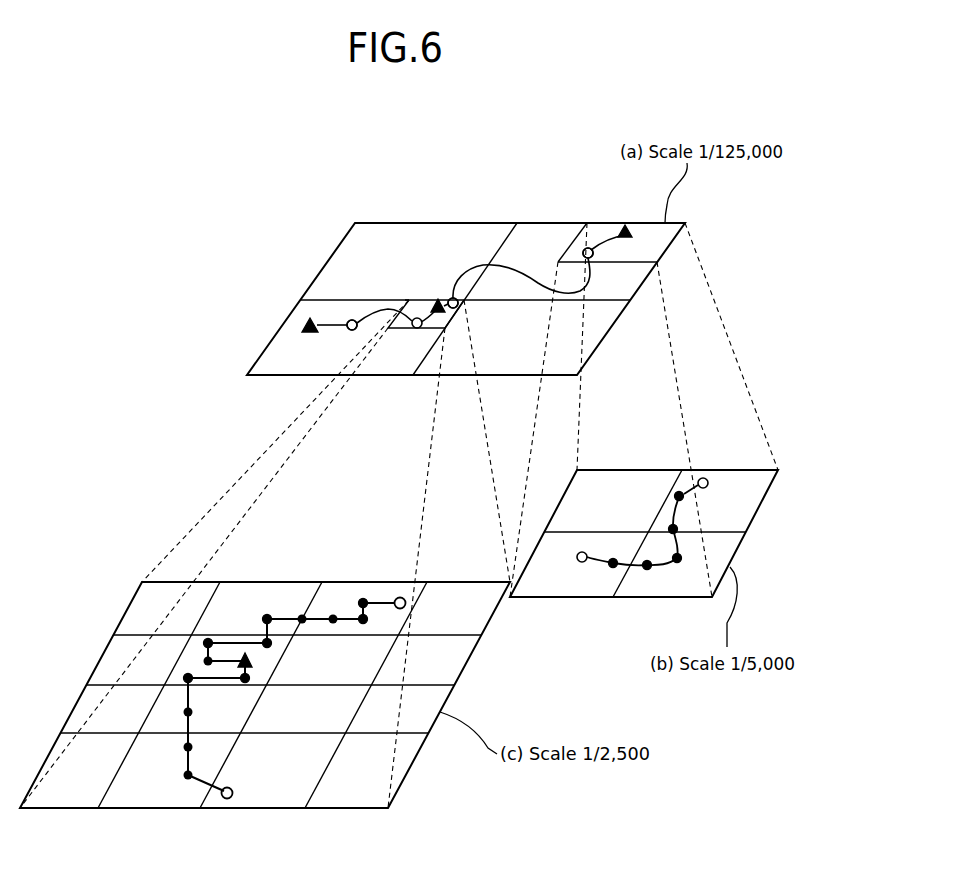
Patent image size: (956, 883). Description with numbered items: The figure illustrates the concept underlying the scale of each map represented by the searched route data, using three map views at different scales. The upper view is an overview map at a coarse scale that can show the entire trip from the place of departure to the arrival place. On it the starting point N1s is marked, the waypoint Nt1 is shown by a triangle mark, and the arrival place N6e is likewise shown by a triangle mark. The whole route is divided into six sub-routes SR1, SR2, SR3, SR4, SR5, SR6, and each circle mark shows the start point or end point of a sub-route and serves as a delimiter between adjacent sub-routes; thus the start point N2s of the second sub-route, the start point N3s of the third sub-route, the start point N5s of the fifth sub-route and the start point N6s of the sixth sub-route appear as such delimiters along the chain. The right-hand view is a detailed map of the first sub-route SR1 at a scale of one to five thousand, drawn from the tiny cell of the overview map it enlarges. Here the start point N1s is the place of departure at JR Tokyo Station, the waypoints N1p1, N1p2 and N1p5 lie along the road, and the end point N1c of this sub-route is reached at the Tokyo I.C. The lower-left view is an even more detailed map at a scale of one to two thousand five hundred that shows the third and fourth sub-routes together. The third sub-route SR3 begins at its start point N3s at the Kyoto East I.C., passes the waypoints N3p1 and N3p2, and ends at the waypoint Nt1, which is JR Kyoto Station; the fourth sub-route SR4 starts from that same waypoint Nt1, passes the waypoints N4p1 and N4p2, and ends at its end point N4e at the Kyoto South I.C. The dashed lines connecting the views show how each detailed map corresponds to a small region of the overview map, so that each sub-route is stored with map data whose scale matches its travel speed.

The start point of sub-route 1 N1s is at (627, 226).
The sub-route 1 SR1 is at (608, 252).
The start point of sub-route 2 N2s is at (587, 249).
The sub-route 2 SR2 is at (521, 273).
The sub-route 3 SR3 is at (472, 313).
The start point of sub-route 3 N3s is at (451, 299).
The waypoint Nt1 is at (437, 300).
The sub-route 4 SR4 is at (436, 331).
The sub-route 5 SR5 is at (381, 306).
The start point of sub-route 5 N5s is at (405, 300).
The sub-route 6 SR6 is at (337, 333).
The start point of sub-route 6 N6s is at (352, 320).
The end point of sub-route 6 N6e is at (308, 322).
The waypoint of sub-route 1 N1p1 is at (677, 492).
The waypoint of sub-route 1 N1p2 is at (670, 529).
The waypoint of sub-route 1 N1p5 is at (615, 567).
The end node of first segment N1c is at (579, 561).
The waypoint of sub-route 3 N3p1 is at (362, 600).
The waypoint of sub-route 3 N3p2 is at (363, 618).
The waypoint of sub-route 4 N4p1 is at (245, 683).
The waypoint of sub-route 4 N4p2 is at (186, 676).
The end point of sub-route 4 N4e is at (225, 799).